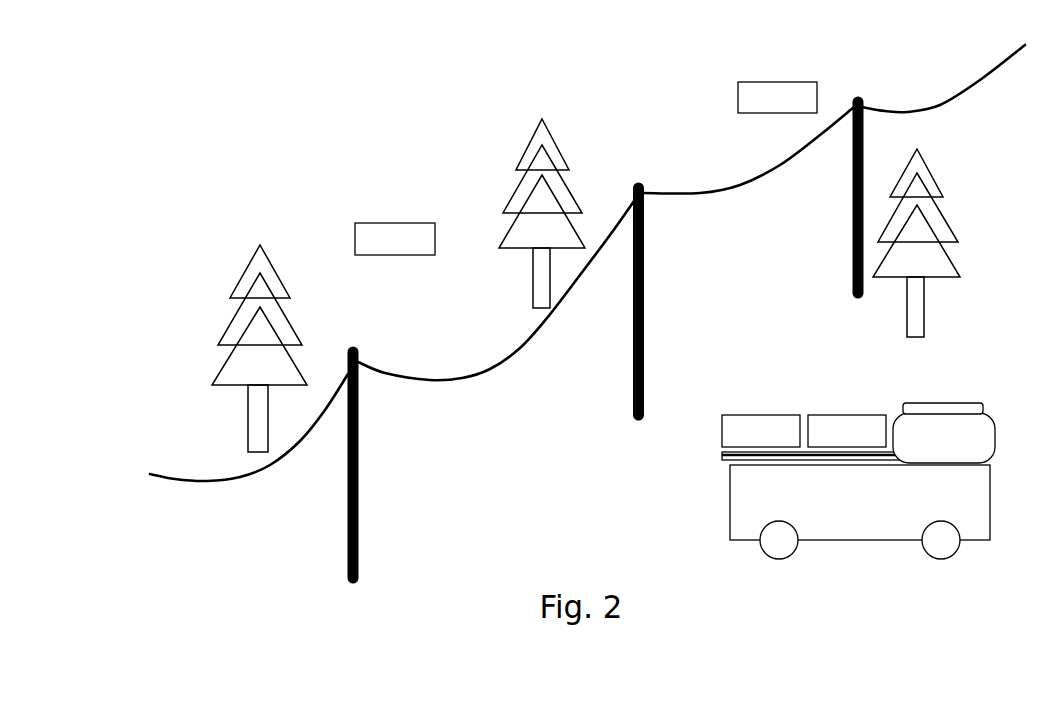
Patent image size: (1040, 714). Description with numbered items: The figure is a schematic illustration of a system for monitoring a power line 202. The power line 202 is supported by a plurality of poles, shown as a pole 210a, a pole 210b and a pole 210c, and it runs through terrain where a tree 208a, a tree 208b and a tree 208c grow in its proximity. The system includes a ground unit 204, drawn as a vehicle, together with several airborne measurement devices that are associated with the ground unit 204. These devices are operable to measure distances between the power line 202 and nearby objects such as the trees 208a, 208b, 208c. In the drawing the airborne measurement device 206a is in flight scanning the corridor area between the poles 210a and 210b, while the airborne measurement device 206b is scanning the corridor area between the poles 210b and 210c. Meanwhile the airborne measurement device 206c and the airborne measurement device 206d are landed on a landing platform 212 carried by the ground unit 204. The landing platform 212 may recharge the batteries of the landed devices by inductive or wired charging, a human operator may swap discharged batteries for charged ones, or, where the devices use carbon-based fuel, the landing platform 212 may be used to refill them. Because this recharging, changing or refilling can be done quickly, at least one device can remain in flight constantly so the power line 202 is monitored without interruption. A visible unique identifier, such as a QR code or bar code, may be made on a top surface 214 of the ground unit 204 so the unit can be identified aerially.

The power line 202 is at (490, 370).
The ground unit 204 is at (860, 512).
The airborne measurement device 206a is at (395, 239).
The airborne measurement device 206b is at (777, 97).
The airborne measurement device 206c is at (761, 431).
The airborne measurement device 206d is at (847, 431).
The tree 208a is at (252, 285).
The tree 208b is at (528, 152).
The tree 208c is at (915, 302).
The pole 210a is at (347, 480).
The pole 210b is at (633, 335).
The pole 210c is at (853, 187).
The landing platform 212 is at (728, 460).
The top surface 214 is at (942, 403).